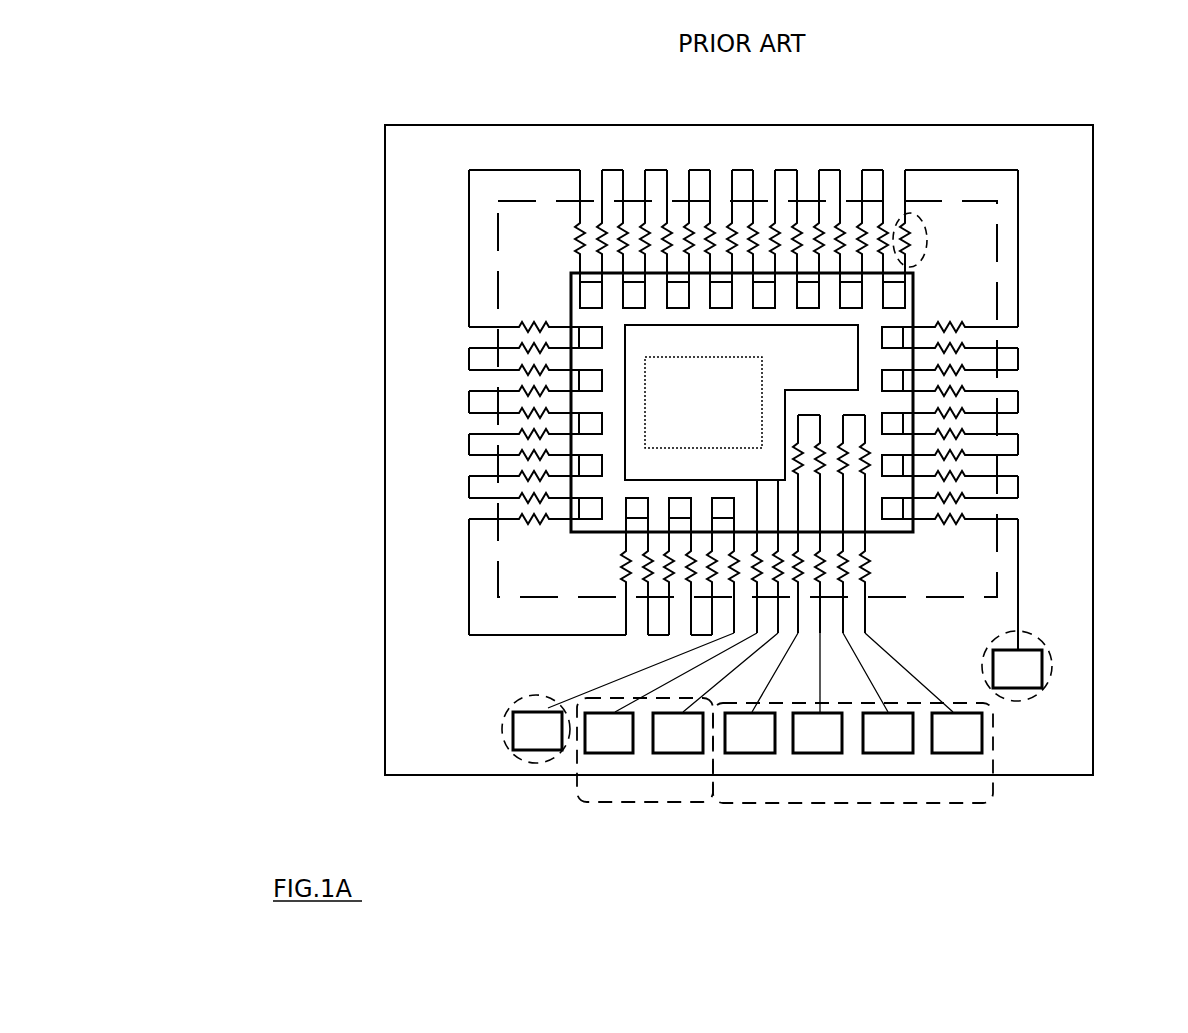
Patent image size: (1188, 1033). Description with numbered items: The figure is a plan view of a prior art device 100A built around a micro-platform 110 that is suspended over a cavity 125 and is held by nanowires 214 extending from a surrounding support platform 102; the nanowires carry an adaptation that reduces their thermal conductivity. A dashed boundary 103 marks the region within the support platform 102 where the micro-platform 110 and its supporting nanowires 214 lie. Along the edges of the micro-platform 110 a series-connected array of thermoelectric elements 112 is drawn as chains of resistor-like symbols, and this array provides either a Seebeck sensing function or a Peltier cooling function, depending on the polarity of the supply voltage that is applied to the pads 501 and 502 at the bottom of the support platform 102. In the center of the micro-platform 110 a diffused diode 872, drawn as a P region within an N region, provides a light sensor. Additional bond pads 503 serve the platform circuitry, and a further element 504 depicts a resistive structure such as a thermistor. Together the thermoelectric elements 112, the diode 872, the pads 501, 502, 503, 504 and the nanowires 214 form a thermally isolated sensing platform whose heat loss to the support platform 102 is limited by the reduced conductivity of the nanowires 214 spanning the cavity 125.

The prior art integrated circuit die layout 100A is at (237, 102).
The support platform 102 is at (455, 695).
The well boundary region 103 is at (488, 550).
The micro-platform 110 is at (571, 295).
The thermoelectric elements 112 is at (450, 444).
The cavity 125 is at (708, 441).
The nanowires 214 is at (927, 233).
The diffused diode 872 is at (786, 351).
The pad 501 is at (520, 762).
The pad 502 is at (1040, 690).
The VD1/VD2 bond pad group 503 is at (653, 802).
The resistive structure 504 is at (922, 803).